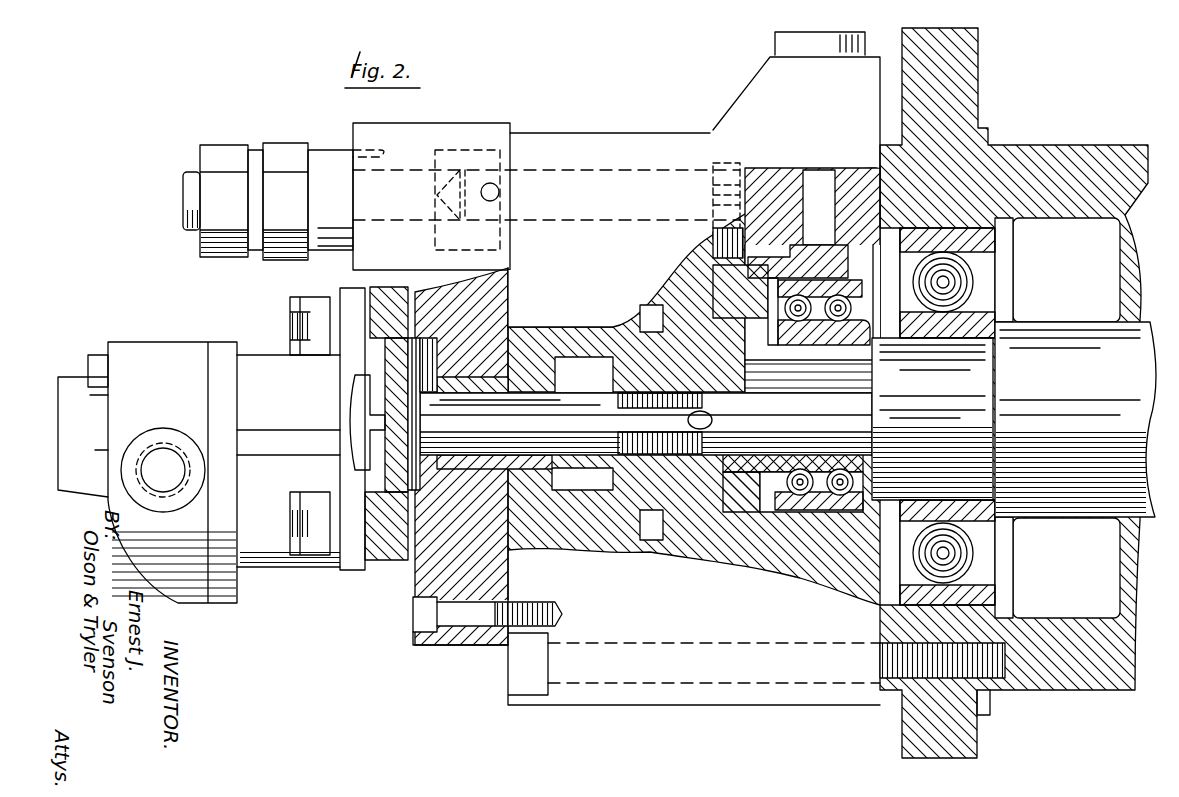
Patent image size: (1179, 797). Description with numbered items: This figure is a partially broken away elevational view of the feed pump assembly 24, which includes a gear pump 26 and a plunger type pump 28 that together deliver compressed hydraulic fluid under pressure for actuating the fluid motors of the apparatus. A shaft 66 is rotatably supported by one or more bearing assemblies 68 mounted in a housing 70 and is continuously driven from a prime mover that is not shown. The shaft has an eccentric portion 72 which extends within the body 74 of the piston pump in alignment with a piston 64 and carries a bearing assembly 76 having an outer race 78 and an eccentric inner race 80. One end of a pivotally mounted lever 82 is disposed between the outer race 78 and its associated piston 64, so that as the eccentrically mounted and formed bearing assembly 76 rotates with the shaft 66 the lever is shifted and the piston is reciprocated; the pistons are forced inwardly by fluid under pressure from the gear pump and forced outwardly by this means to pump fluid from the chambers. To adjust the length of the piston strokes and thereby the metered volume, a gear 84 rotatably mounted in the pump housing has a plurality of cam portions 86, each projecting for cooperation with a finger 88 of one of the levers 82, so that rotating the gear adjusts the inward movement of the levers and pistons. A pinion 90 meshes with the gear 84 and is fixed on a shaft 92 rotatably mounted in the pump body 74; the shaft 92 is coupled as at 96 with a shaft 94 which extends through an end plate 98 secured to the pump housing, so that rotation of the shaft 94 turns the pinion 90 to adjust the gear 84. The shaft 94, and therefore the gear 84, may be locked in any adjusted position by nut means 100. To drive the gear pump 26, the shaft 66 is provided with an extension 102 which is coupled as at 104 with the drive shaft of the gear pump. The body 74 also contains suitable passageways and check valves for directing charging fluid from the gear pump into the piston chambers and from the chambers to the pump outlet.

The feed pump assembly 24 is at (563, 125).
The gear pump 26 is at (150, 340).
The plunger type pump 28 is at (440, 648).
The piston 64 is at (825, 200).
The shaft 66 is at (1052, 330).
The bearing assembly 68 is at (995, 255).
The housing 70 is at (1040, 157).
The eccentric portion 72 is at (845, 407).
The body 74 is at (590, 705).
The bearing assembly 76 is at (788, 509).
The outer race 78 is at (806, 512).
The eccentric inner race 80 is at (825, 350).
The lever 82 is at (848, 263).
The gear 84 is at (708, 258).
The cam portion 86 is at (660, 292).
The finger 88 is at (705, 260).
The pinion 90 is at (713, 160).
The shaft 92 is at (600, 170).
The shaft 94 is at (190, 183).
The coupling 96 is at (482, 185).
The end plate 98 is at (423, 585).
The nut means 100 is at (249, 139).
The extension 102 is at (583, 444).
The coupling 104 is at (355, 462).